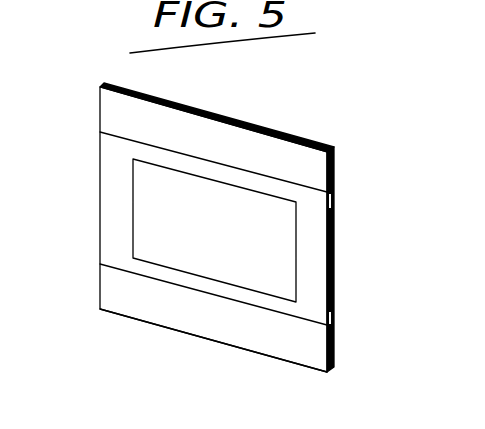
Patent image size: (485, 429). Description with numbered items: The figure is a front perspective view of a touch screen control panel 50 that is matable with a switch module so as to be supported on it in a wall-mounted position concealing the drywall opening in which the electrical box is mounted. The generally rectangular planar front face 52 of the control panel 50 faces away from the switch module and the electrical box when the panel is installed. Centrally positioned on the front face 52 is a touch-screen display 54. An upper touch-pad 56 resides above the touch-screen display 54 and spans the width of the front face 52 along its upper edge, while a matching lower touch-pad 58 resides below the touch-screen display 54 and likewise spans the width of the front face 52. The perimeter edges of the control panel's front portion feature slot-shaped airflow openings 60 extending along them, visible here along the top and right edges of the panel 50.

The touch screen control panel 50 is at (220, 235).
The front face 52 is at (169, 316).
The touch-screen display 54 is at (150, 232).
The upper touch-pad 56 is at (125, 117).
The lower touch-pad 58 is at (280, 343).
The airflow openings 60 is at (240, 118).